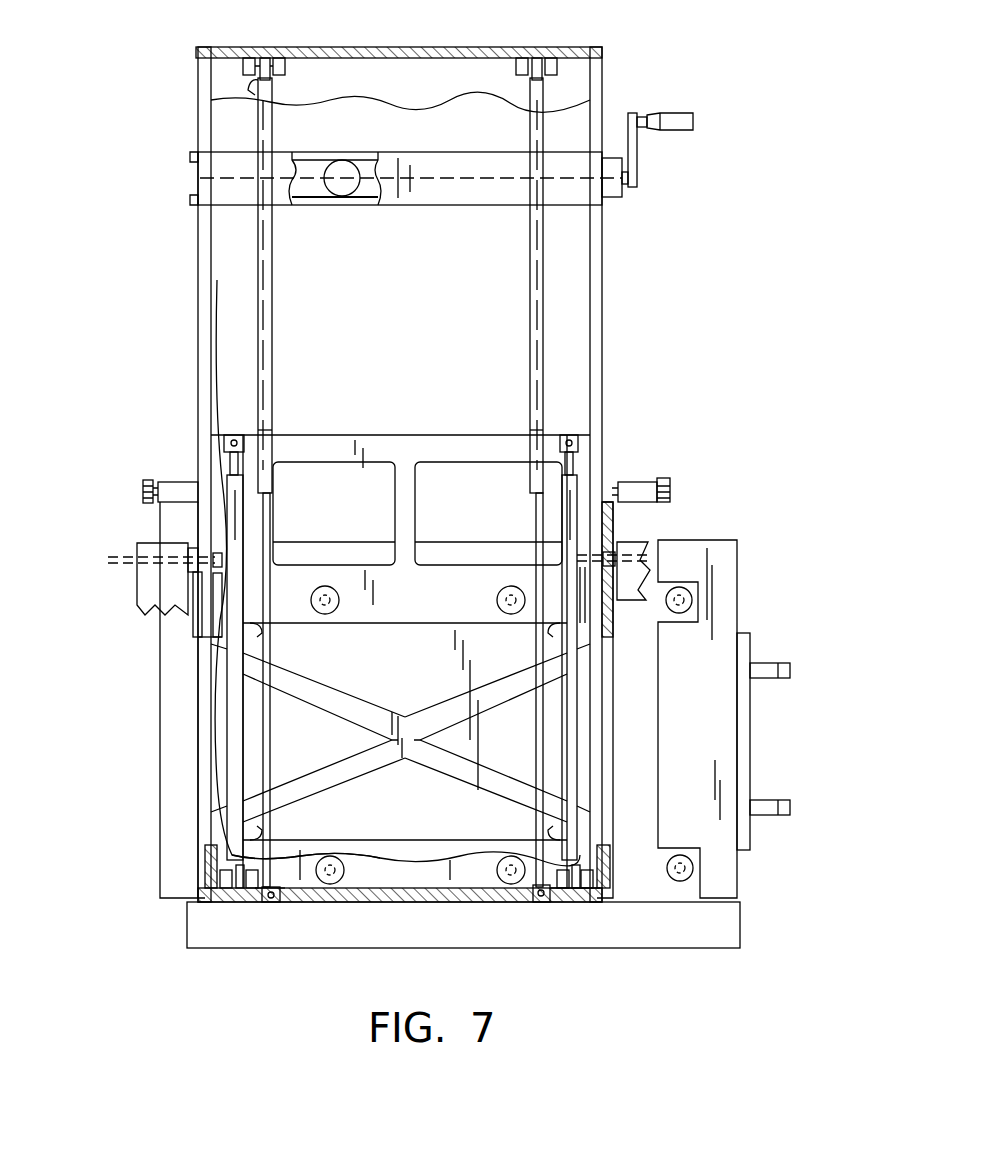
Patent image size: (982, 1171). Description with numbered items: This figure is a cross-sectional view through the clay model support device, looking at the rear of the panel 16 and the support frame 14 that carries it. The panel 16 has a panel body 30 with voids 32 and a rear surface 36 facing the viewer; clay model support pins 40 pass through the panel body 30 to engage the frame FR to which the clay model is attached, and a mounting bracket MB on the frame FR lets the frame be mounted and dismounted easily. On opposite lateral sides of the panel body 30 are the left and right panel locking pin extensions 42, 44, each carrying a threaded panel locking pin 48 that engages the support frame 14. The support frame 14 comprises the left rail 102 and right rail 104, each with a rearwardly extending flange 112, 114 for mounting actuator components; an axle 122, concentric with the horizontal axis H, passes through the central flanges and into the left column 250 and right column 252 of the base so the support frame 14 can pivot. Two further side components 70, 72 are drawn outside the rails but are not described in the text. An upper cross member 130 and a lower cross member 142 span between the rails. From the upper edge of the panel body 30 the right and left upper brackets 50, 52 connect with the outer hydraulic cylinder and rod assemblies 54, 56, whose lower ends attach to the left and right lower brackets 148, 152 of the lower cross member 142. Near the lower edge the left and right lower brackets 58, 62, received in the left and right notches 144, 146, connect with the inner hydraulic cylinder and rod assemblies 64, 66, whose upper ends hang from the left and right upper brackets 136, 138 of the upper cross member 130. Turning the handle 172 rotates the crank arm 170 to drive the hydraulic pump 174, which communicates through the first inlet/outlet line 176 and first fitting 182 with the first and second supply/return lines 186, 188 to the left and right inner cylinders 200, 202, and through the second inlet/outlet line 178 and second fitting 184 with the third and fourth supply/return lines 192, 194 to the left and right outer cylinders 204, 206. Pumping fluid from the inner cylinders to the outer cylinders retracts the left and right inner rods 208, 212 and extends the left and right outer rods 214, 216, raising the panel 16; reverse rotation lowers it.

The support frame 14 is at (625, 272).
The panel 16 is at (642, 440).
The panel body 30 is at (362, 442).
The voids 32 is at (445, 465).
The rear surface 36 is at (390, 448).
The clay model support pins 40 is at (333, 612).
The left panel locking pin extension 42 is at (636, 486).
The right panel locking pin extension 44 is at (172, 482).
The panel locking pin 48 is at (672, 490).
The right upper bracket 50 is at (540, 430).
The left upper bracket 52 is at (268, 430).
The left outer hydraulic cylinder and rod assembly 54 is at (558, 528).
The right outer hydraulic cylinder and rod assembly 56 is at (246, 528).
The left lower bracket 58 is at (547, 905).
The right lower bracket 62 is at (266, 905).
The left inner hydraulic cylinder and rod assembly 64 is at (527, 326).
The right inner hydraulic cylinder and rod assembly 66 is at (275, 312).
The right mounting plate 70 is at (613, 623).
The left mounting plate 72 is at (182, 638).
The left rail 102 is at (600, 368).
The right rail 104 is at (205, 330).
The rearwardly extending flange 112 is at (612, 182).
The rearwardly extending flange 114 is at (200, 180).
The axle 122 is at (152, 560).
The upper cross member 130 is at (408, 50).
The left upper bracket 136 is at (514, 65).
The right upper bracket 138 is at (278, 68).
The lower cross member 142 is at (355, 898).
The left notch 144 is at (538, 905).
The right notch 146 is at (276, 905).
The left lower bracket 148 is at (580, 905).
The right lower bracket 152 is at (240, 905).
The crank arm 170 is at (640, 152).
The handle 172 is at (675, 120).
The hydraulic pump 174 is at (356, 165).
The first inlet/outlet line 176 is at (300, 160).
The second inlet/outlet line 178 is at (300, 198).
The first fitting 182 is at (190, 157).
The second fitting 184 is at (192, 202).
The first supply/return line 186 is at (205, 100).
The second supply/return line 188 is at (248, 70).
The third supply/return line 192 is at (215, 280).
The fourth supply/return line 194 is at (300, 860).
The left inner cylinder 200 is at (528, 268).
The right inner cylinder 202 is at (275, 282).
The left outer cylinder 204 is at (562, 708).
The right outer cylinder 206 is at (248, 748).
The left inner rod 208 is at (545, 740).
The right inner rod 212 is at (320, 700).
The left outer rod 214 is at (580, 450).
The right outer rod 216 is at (243, 450).
The left column 250 is at (628, 592).
The right column 252 is at (165, 598).
The horizontal axis H is at (150, 543).
The frame FR is at (736, 560).
The mounting bracket MB is at (752, 760).